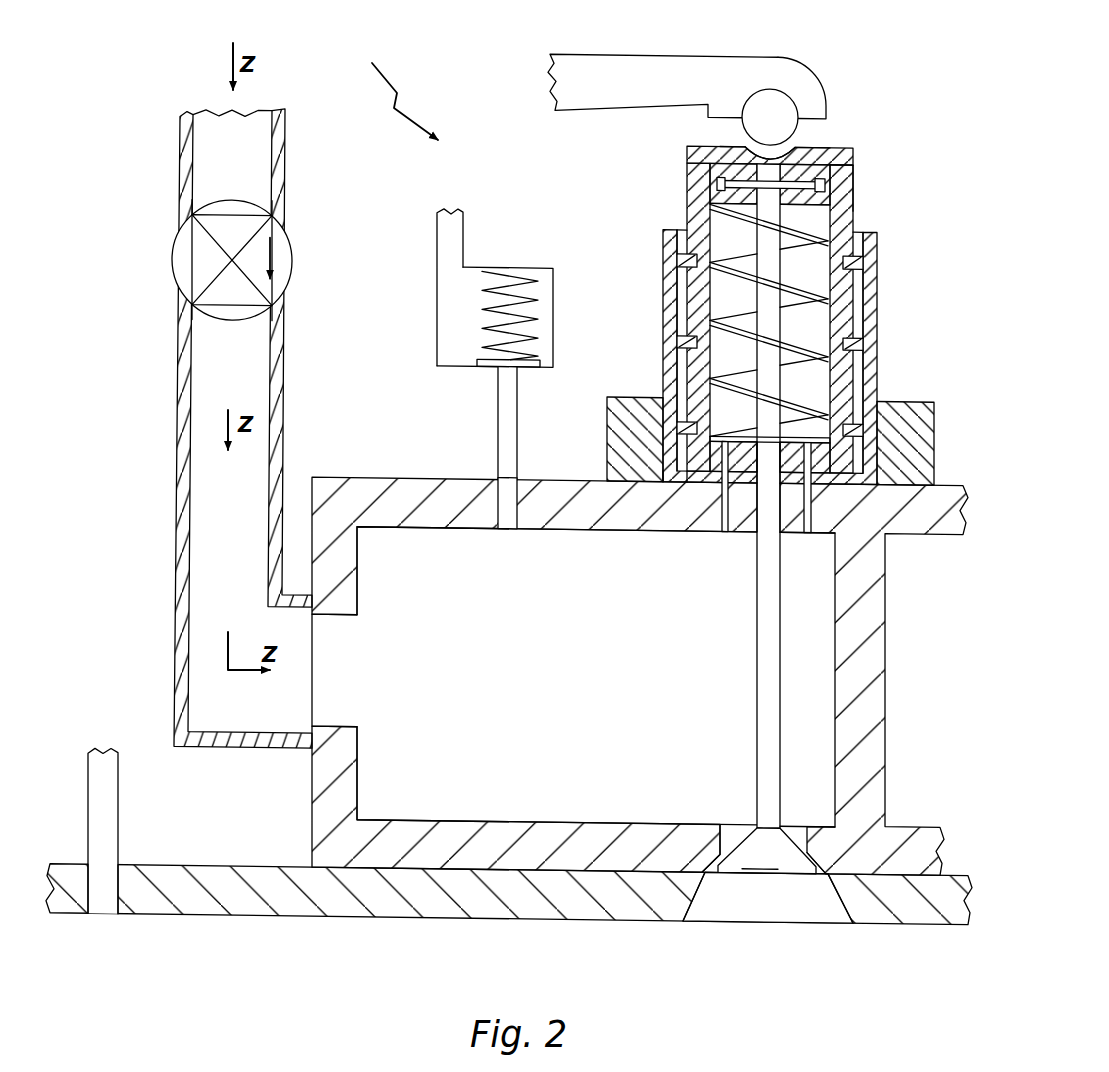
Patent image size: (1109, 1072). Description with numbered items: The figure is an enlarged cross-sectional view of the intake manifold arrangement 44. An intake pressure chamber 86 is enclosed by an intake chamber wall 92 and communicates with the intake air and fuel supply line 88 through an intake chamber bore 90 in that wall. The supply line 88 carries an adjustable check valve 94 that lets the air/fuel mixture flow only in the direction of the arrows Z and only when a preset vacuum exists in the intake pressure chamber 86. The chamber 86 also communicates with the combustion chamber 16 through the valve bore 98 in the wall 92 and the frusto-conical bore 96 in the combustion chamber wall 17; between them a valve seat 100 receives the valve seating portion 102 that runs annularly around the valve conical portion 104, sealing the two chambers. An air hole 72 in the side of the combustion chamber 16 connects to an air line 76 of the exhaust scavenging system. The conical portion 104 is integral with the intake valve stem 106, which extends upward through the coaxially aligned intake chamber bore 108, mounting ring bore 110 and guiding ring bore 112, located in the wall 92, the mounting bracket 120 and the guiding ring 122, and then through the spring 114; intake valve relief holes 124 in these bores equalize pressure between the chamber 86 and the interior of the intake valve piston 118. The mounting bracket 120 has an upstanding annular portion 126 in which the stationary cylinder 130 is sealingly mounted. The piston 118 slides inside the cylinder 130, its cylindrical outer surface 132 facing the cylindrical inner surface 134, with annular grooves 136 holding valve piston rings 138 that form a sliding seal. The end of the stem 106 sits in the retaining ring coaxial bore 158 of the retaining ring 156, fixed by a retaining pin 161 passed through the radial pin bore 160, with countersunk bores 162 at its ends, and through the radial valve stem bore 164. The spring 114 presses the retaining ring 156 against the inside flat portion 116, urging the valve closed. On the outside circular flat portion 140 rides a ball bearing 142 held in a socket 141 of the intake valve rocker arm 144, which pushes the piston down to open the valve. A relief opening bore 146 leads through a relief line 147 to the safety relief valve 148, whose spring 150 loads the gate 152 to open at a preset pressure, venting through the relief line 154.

The combustion chamber 16 is at (243, 917).
The combustion chamber wall 17 is at (373, 900).
The intake manifold arrangement 44 is at (396, 89).
The air hole 72 is at (110, 895).
The air lines 76 is at (118, 800).
The intake pressure chamber 86 is at (519, 668).
The intake air and fuel supply line 88 is at (285, 410).
The intake chamber bore 90 is at (338, 617).
The intake chamber wall 92 is at (352, 557).
The adjustable check valve 94 is at (292, 238).
The frusto-conical bore 96 is at (690, 903).
The valve bore 98 is at (725, 838).
The valve seat 100 is at (707, 870).
The valve seating portion 102 is at (825, 875).
The valve conical portion 104 is at (767, 850).
The intake valve stem 106 is at (755, 707).
The intake chamber bore 108 is at (783, 540).
The mounting ring bore 110 is at (757, 515).
The guiding ring bore 112 is at (767, 457).
The spring 114 is at (795, 218).
The inside flat portion 116 is at (853, 153).
The intake valve piston 118 is at (847, 177).
The mounting bracket 120 is at (677, 485).
The guiding ring 122 is at (747, 500).
The intake valve relief holes 124 is at (722, 520).
The annular portion 126 is at (623, 440).
The stationary cylinder 130 is at (878, 300).
The cylindrical outer surface 132 is at (687, 200).
The cylindrical inner surface 134 is at (693, 240).
The annular grooves 136 is at (690, 330).
The valve piston rings 138 is at (680, 263).
The outside circular flat portion 140 is at (835, 160).
The socket 141 is at (756, 86).
The ball bearing 142 is at (773, 107).
The intake valve rocker arm 144 is at (614, 72).
The relief opening bore 146 is at (509, 517).
The relief line 147 is at (497, 433).
The safety relief valve 148 is at (435, 335).
The spring 150 is at (523, 290).
The gate 152 is at (487, 368).
The relief line 154 is at (437, 250).
The retaining ring 156 is at (748, 160).
The retaining ring coaxial bore 158 is at (825, 147).
The radial pin bore 160 is at (757, 173).
The retaining pin 161 is at (710, 213).
The countersunk bores 162 is at (718, 185).
The radial valve stem bore 164 is at (757, 148).